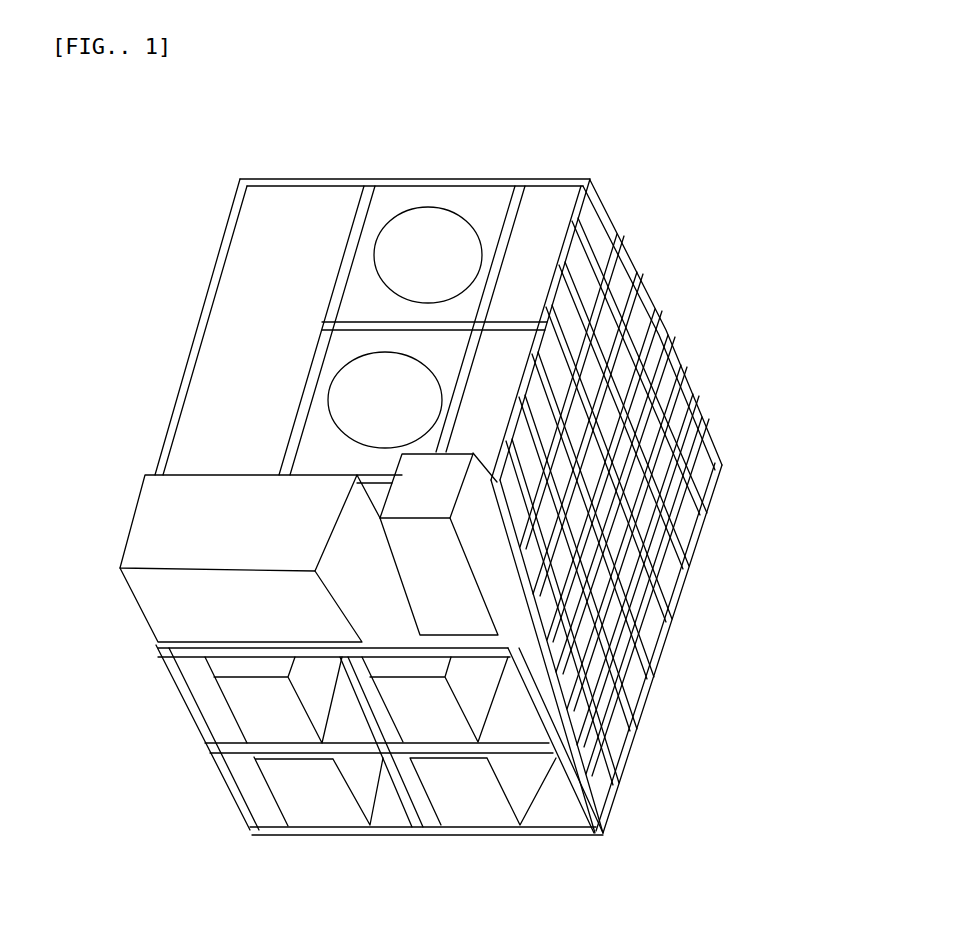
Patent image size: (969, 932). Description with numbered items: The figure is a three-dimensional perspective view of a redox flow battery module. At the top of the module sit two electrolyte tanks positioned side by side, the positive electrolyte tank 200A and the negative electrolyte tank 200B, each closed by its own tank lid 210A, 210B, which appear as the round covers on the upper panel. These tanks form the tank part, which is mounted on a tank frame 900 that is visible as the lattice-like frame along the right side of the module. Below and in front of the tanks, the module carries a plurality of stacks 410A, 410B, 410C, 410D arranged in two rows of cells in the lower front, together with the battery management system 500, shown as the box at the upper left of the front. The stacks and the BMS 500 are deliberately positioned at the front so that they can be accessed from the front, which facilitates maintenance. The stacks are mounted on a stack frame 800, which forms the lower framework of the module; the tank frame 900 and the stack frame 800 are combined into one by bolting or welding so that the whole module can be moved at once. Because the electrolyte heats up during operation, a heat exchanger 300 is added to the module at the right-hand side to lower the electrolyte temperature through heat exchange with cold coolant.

The positive electrolyte tank 200A is at (357, 342).
The negative electrolyte tank 200B is at (473, 210).
The tank lid 210A is at (398, 398).
The tank lid 210B is at (425, 225).
The heat exchanger 300 is at (580, 713).
The stack 410A is at (248, 700).
The stack 410B is at (298, 800).
The stack 410C is at (468, 697).
The stack 410D is at (478, 798).
The battery management system 500 is at (143, 547).
The stack frame 800 is at (587, 783).
The tank frame 900 is at (665, 330).